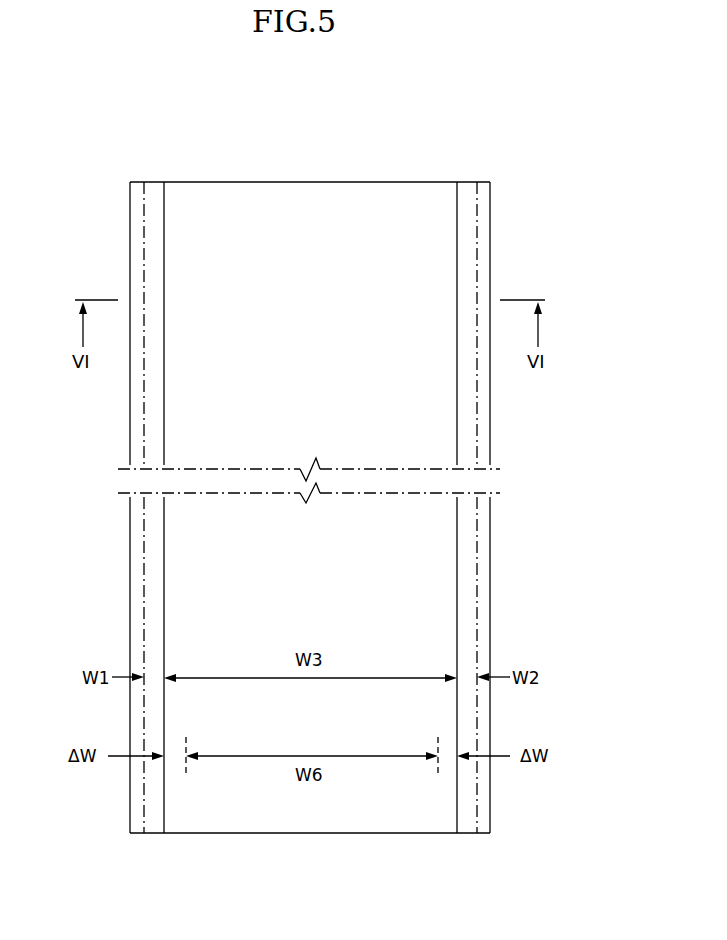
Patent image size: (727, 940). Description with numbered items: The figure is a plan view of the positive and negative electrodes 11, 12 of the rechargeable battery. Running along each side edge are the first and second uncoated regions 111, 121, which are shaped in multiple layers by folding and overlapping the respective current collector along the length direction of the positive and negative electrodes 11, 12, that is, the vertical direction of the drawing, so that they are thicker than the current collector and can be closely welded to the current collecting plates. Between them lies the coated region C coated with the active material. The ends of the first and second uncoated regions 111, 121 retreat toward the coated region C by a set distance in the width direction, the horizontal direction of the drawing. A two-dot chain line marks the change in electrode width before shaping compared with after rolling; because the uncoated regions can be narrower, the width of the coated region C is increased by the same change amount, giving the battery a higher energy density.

The positive electrode 11 is at (126, 220).
The negative electrode 12 is at (500, 223).
The first uncoated region 111 is at (155, 828).
The second uncoated region 121 is at (468, 828).
The coated region C is at (440, 197).